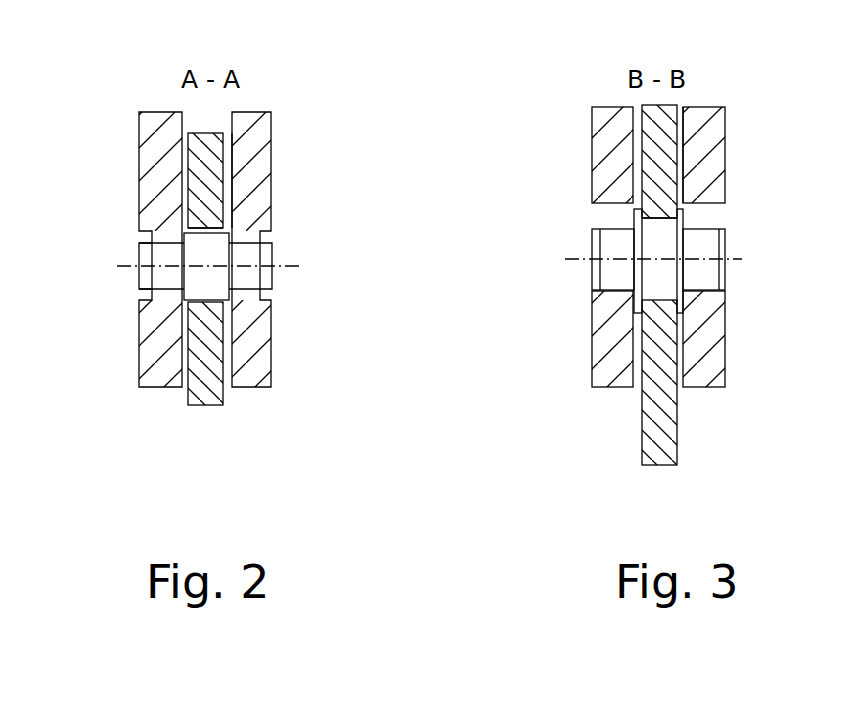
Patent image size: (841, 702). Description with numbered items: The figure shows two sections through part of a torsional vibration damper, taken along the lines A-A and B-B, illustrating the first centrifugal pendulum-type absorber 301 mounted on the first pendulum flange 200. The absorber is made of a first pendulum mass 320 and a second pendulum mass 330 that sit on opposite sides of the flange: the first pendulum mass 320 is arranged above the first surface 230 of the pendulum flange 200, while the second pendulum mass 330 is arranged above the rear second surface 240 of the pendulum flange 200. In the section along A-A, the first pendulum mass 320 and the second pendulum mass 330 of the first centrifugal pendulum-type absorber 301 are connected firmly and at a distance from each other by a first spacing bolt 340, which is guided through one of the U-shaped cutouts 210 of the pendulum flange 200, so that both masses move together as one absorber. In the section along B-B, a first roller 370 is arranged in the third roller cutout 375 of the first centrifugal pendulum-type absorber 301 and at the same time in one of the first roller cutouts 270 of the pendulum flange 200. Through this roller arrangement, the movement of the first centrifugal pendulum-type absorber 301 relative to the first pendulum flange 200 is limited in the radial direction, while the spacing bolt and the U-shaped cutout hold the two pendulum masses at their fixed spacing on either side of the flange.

In FIG. 2, the first pendulum flange 200 is at (210, 396).
In FIG. 3, the first pendulum flange 200 is at (662, 457).
In FIG. 2, the U-shaped cutout 210 is at (273, 243).
In FIG. 2, the first surface 230 is at (228, 206).
In FIG. 3, the first surface 230 is at (684, 204).
In FIG. 2, the rear second surface 240 is at (221, 240).
In FIG. 3, the rear second surface 240 is at (642, 203).
In FIG. 3, the first roller cutout 270 is at (663, 210).
In FIG. 2, the first centrifugal pendulum-type absorber 301 is at (213, 226).
In FIG. 3, the first centrifugal pendulum-type absorber 301 is at (663, 226).
In FIG. 2, the first pendulum mass 320 is at (258, 143).
In FIG. 3, the first pendulum mass 320 is at (705, 144).
In FIG. 2, the second pendulum mass 330 is at (158, 144).
In FIG. 3, the second pendulum mass 330 is at (608, 144).
In FIG. 2, the first spacing bolt 340 is at (203, 283).
In FIG. 3, the first roller 370 is at (662, 270).
In FIG. 3, the third roller cutout 375 is at (618, 205).